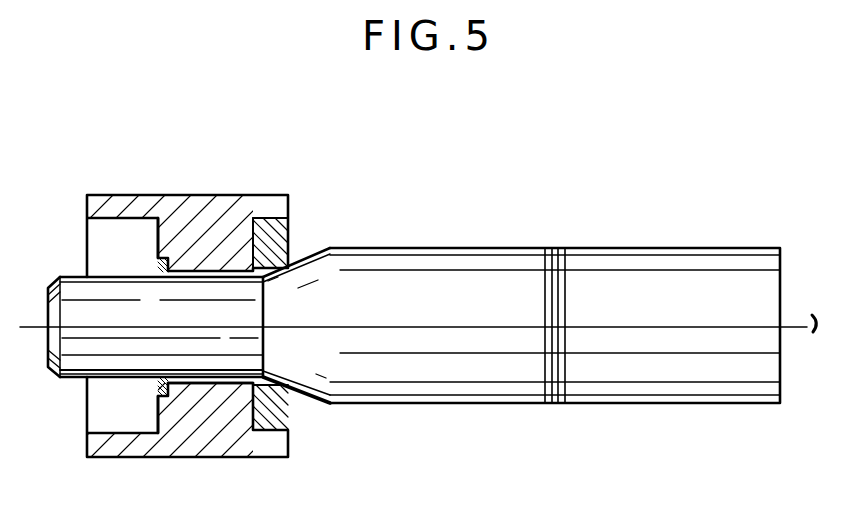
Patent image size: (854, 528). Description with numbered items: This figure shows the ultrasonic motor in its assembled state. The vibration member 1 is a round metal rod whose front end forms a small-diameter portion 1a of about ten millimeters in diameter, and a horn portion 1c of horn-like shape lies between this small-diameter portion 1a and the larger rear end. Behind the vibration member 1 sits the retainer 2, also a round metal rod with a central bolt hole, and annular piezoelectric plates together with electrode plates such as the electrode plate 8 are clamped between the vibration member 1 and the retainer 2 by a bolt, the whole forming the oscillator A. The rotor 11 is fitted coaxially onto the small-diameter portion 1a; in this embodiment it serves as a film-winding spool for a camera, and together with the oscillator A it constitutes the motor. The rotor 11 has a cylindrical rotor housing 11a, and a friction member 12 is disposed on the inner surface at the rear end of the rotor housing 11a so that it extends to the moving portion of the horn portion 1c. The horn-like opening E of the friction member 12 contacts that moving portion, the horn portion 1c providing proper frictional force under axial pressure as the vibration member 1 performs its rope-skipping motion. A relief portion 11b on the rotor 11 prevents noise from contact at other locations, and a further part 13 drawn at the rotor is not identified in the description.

The vibration member 1 is at (427, 261).
The small-diameter portion 1a is at (80, 358).
The horn portion 1c is at (264, 337).
The retainer 2 is at (650, 249).
The electrode plate 8 is at (218, 197).
The rotor 11 is at (122, 180).
The rotor housing 11a is at (163, 445).
The relief portion 11b is at (223, 382).
The friction member 12 is at (283, 407).
The retaining ring 13 is at (157, 388).
The oscillator A is at (542, 222).
The horn-like opening E is at (312, 258).